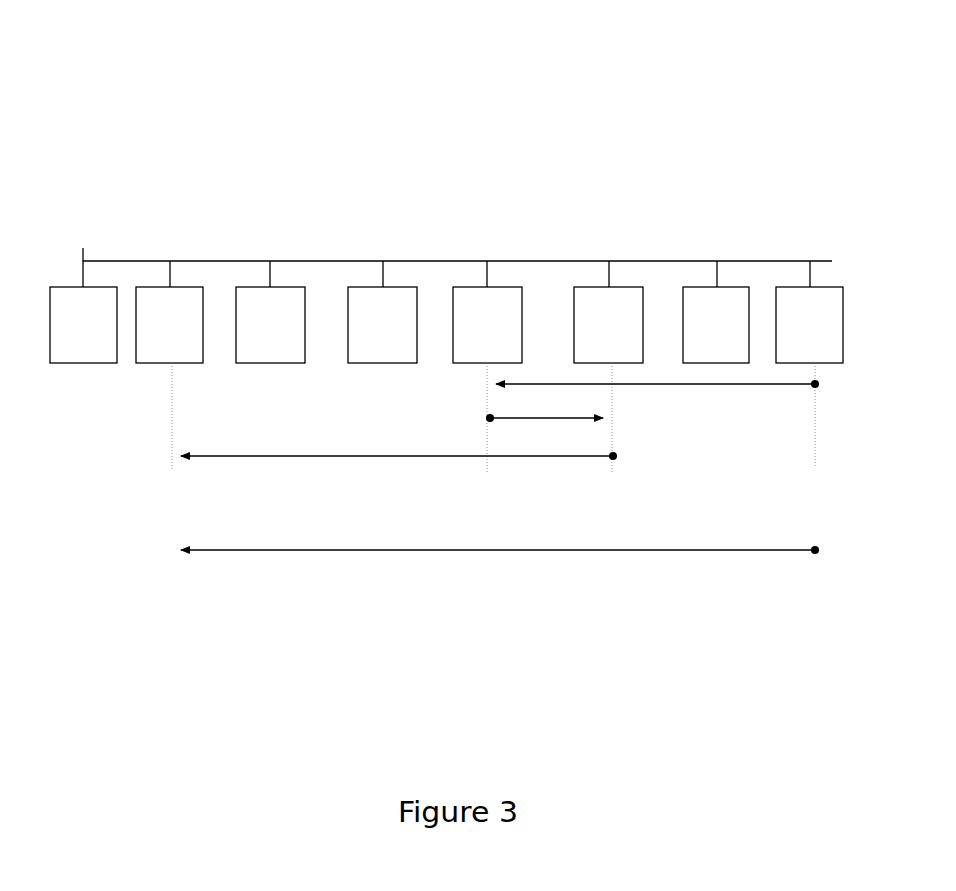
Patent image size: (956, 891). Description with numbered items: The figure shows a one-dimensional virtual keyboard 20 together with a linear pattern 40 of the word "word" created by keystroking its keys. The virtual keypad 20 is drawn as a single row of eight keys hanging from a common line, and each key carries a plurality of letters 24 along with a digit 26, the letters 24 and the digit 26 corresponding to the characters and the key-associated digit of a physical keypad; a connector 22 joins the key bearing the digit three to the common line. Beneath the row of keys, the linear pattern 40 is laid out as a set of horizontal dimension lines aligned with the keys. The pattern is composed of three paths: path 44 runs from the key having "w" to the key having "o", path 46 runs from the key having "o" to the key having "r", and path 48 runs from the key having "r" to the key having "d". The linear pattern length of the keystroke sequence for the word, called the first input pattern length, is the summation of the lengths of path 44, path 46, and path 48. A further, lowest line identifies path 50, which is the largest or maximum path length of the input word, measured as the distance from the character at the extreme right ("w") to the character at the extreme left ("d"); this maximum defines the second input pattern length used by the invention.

The virtual keypad 20 is at (157, 99).
The key connector line 22 is at (181, 290).
The letters 24 is at (153, 337).
The digit 26 is at (178, 303).
The linear pattern 40 is at (137, 524).
The path 44 is at (743, 386).
The path 46 is at (567, 418).
The path 48 is at (293, 458).
The path 50 is at (483, 555).